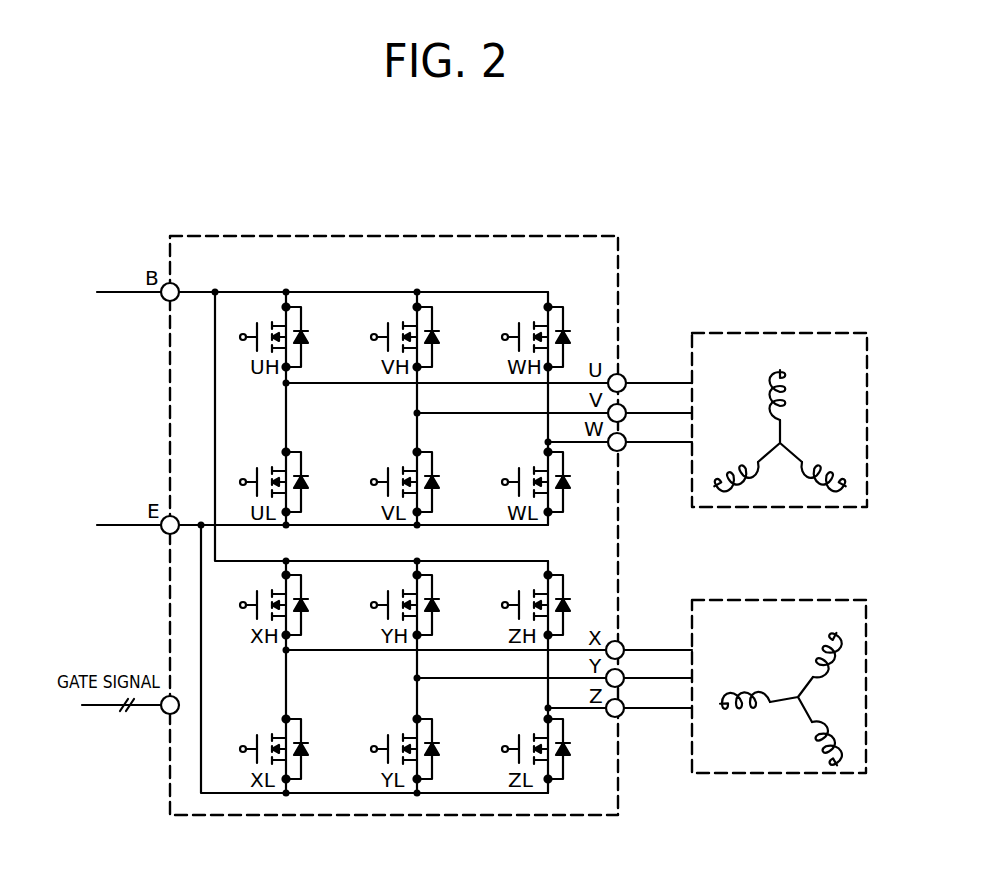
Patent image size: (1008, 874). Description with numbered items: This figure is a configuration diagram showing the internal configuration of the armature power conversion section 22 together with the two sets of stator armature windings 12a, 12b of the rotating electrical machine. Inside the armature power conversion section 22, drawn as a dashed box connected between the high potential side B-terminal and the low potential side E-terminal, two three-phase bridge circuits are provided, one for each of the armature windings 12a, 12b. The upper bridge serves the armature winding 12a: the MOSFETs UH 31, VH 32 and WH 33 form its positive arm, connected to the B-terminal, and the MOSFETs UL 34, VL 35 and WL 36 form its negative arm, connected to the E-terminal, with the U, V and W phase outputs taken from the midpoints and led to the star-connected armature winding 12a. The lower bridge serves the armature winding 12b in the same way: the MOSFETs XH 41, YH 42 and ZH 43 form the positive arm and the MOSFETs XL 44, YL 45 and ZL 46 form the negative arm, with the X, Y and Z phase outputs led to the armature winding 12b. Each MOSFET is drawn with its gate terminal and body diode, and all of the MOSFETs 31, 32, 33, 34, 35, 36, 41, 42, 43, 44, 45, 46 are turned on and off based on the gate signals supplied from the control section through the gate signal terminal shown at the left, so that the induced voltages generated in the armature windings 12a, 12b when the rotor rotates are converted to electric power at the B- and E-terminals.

The armature power conversion section 22 is at (618, 270).
The armature winding 12a is at (780, 333).
The armature winding 12b is at (780, 600).
The UH MOSFET 31 is at (257, 351).
The VH MOSFET 32 is at (388, 326).
The WH MOSFET 33 is at (519, 326).
The UL MOSFET 34 is at (257, 470).
The VL MOSFET 35 is at (388, 471).
The WL MOSFET 36 is at (519, 471).
The XH MOSFET 41 is at (257, 620).
The YH MOSFET 42 is at (388, 594).
The ZH MOSFET 43 is at (519, 594).
The XL MOSFET 44 is at (257, 737).
The YL MOSFET 45 is at (388, 742).
The ZL MOSFET 46 is at (519, 742).